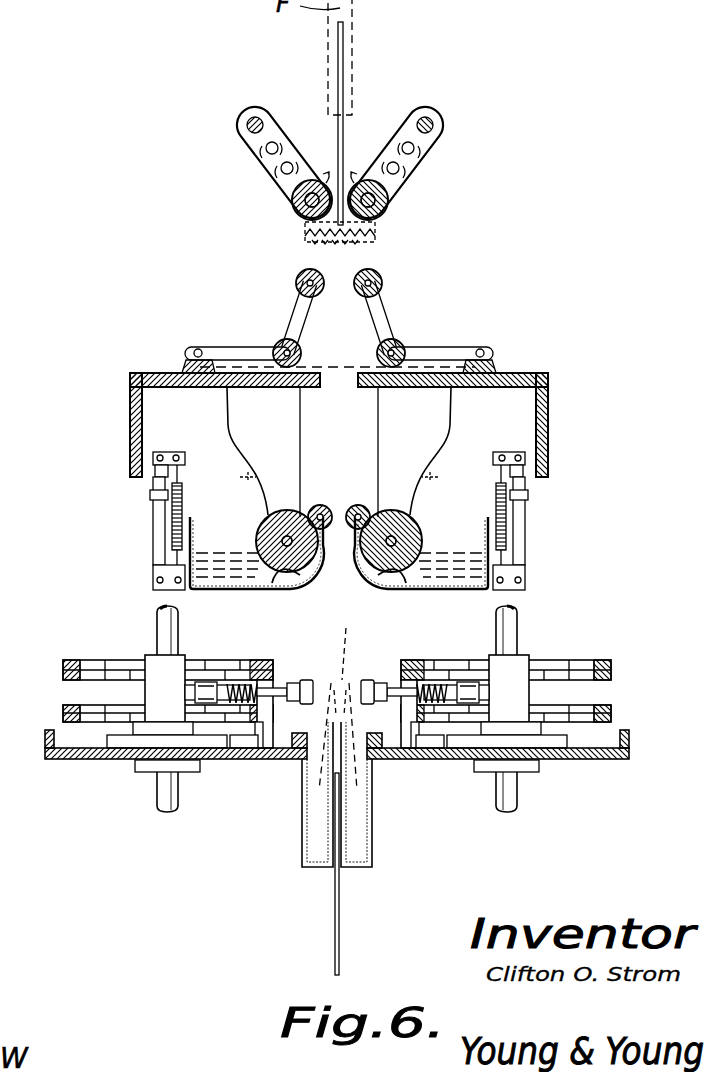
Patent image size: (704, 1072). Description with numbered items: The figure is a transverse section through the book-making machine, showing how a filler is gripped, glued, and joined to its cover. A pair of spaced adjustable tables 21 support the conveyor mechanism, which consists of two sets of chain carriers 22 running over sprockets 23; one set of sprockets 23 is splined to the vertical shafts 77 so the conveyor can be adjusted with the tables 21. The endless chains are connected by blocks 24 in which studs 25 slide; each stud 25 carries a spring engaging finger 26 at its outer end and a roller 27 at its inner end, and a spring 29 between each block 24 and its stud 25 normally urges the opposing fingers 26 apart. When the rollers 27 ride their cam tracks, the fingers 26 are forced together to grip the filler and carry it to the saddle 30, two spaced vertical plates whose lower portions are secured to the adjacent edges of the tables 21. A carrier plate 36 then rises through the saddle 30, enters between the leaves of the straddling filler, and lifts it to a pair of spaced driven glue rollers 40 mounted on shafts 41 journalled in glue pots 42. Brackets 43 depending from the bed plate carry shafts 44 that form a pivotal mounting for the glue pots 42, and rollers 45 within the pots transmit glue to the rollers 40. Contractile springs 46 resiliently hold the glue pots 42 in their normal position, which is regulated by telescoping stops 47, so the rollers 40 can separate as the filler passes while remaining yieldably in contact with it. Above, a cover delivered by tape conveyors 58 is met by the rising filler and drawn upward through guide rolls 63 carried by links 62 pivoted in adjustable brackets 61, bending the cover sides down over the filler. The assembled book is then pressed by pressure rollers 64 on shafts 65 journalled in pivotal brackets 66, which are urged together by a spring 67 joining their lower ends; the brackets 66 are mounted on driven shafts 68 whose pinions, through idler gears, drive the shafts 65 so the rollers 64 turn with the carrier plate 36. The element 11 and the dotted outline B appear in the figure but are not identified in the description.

The housing 11 is at (136, 366).
The adjustable tables 21 is at (72, 762).
The chain carriers 22 is at (300, 650).
The sprockets 23 is at (95, 710).
The blocks 24 is at (300, 680).
The studs 25 is at (244, 682).
The spring engaging fingers 26 is at (305, 706).
The rollers 27 is at (462, 688).
The springs 29 is at (440, 690).
The saddle 30 is at (297, 806).
The carrier plates 36 is at (345, 134).
The glue rollers 40 is at (339, 504).
The shafts 41 is at (310, 508).
The glue pots 42 is at (234, 528).
The brackets 43 is at (376, 414).
The shafts 44 is at (372, 570).
The rollers 45 is at (280, 585).
The contractile springs 46 is at (196, 486).
The stops 47 is at (146, 527).
The tape conveyors 58 is at (240, 393).
The brackets 61 is at (185, 366).
The links 62 is at (260, 340).
The guide rolls 63 is at (375, 357).
The pressure rollers 64 is at (340, 243).
The shafts 65 is at (298, 213).
The pivotal brackets 66 is at (260, 168).
The spring 67 is at (318, 250).
The driven shafts 68 is at (258, 118).
The vertical shafts 77 is at (156, 626).
The bar B is at (358, 26).